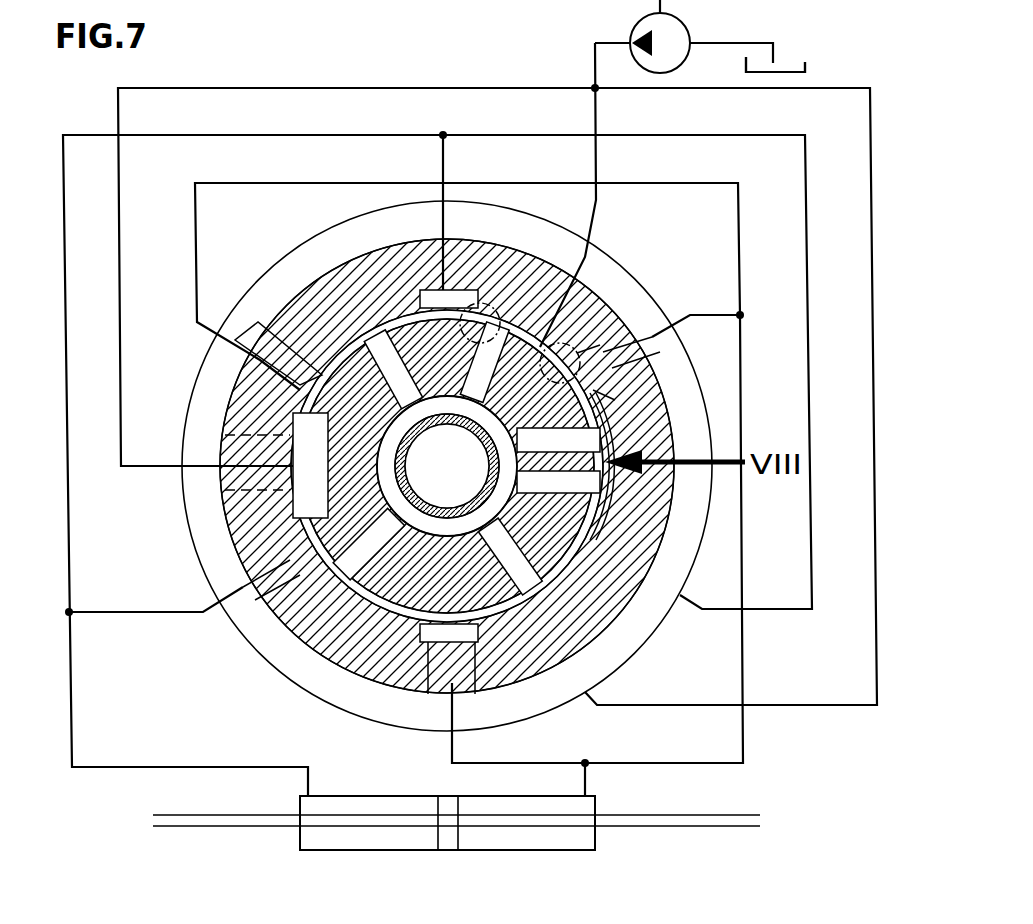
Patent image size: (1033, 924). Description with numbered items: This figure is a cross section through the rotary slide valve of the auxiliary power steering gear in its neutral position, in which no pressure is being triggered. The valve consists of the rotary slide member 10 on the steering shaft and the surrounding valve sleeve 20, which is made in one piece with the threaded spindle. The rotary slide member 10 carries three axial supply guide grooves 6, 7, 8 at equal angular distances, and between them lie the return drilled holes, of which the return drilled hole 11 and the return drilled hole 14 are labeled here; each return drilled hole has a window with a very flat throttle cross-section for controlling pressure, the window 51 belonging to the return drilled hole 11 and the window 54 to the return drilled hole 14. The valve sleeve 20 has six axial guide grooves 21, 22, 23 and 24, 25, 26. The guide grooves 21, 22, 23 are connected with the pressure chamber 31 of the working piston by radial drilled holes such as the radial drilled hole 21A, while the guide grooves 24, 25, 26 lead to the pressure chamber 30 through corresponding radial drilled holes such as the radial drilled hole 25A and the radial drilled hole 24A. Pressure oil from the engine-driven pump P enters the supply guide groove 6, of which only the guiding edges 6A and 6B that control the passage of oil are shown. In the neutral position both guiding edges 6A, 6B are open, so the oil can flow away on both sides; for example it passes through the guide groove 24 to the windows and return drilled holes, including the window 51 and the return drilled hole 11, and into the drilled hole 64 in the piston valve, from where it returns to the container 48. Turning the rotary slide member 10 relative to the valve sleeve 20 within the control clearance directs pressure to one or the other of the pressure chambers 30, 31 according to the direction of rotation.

The pump P is at (670, 35).
The container 48 is at (790, 65).
The radial drilled hole 21A is at (435, 290).
The guide groove 21 is at (430, 293).
The guiding edge 6A is at (505, 290).
The supply guide groove 6 is at (583, 258).
The guiding edge 6B is at (560, 345).
The radial drilled hole 24A is at (603, 352).
The guide groove 24 is at (577, 353).
The return drilled hole 11 is at (700, 397).
The window 51 is at (593, 390).
The valve sleeve 20 is at (653, 423).
The guide groove 26 is at (300, 388).
The supply guide groove 8 is at (212, 508).
The return drilled hole 14 is at (573, 483).
The window 54 is at (597, 535).
The guide groove 22 is at (593, 547).
The rotary slide member 10 is at (595, 547).
The supply guide groove 7 is at (560, 600).
The guide groove 23 is at (260, 655).
The drilled hole 64 is at (445, 482).
The radial drilled hole 25A is at (443, 657).
The guide groove 25 is at (480, 667).
The pressure chamber 30 is at (570, 838).
The pressure chamber 31 is at (335, 838).